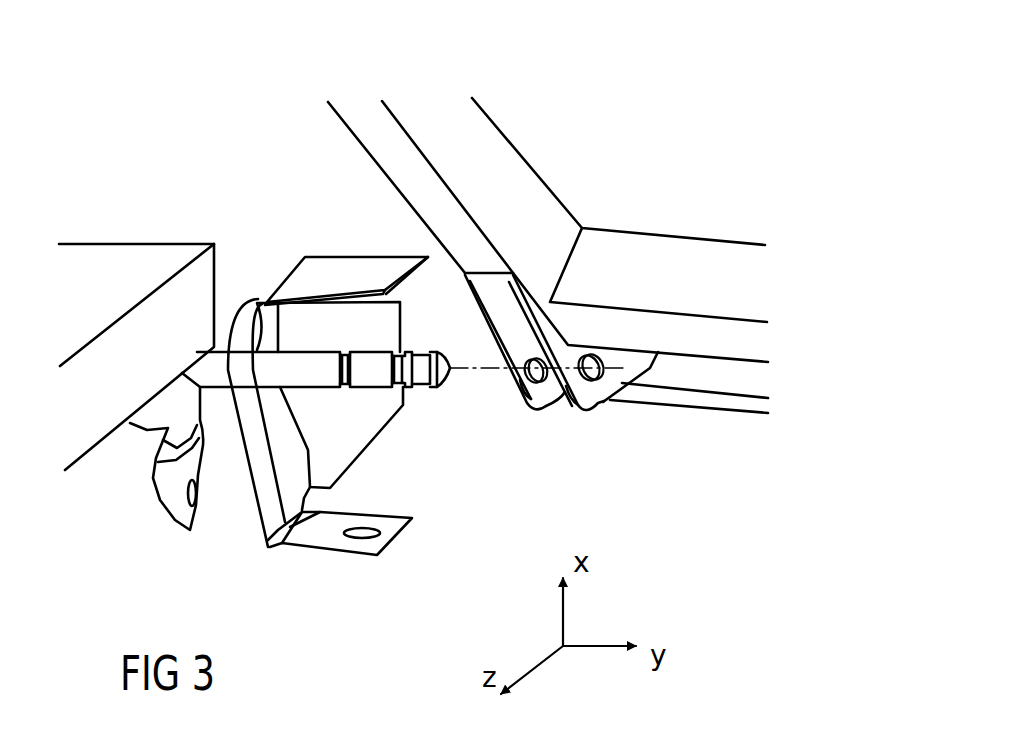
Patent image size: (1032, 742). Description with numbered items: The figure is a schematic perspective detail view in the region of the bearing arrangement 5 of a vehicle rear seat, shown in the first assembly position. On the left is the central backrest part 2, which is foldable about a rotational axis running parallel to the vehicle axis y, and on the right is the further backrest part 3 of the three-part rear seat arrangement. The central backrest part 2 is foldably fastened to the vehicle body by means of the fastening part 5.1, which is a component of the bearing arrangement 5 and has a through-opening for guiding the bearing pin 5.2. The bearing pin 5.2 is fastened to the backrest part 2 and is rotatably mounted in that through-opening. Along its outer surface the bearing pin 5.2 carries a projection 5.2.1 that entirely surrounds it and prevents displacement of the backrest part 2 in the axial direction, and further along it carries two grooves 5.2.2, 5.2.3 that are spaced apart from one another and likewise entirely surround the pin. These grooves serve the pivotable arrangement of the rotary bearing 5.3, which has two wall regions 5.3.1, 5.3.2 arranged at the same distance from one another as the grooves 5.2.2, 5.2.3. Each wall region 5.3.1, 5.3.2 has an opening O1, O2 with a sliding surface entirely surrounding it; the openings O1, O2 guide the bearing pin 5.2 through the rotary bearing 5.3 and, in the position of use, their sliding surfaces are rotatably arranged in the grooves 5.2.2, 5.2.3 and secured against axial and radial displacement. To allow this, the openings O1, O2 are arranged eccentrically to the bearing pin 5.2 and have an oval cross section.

The central backrest part 2 is at (100, 258).
The further backrest part 3 is at (442, 120).
The bearing arrangement 5 is at (322, 277).
The fastening part 5.1 is at (270, 520).
The bearing pin 5.2 is at (346, 434).
The projection 5.2.1 is at (260, 300).
The groove 5.2.2 is at (348, 388).
The groove 5.2.3 is at (445, 385).
The rotary bearing 5.3 is at (591, 394).
The wall region 5.3.1 is at (550, 392).
The wall region 5.3.2 is at (592, 380).
The opening O1 is at (538, 378).
The opening O2 is at (600, 405).